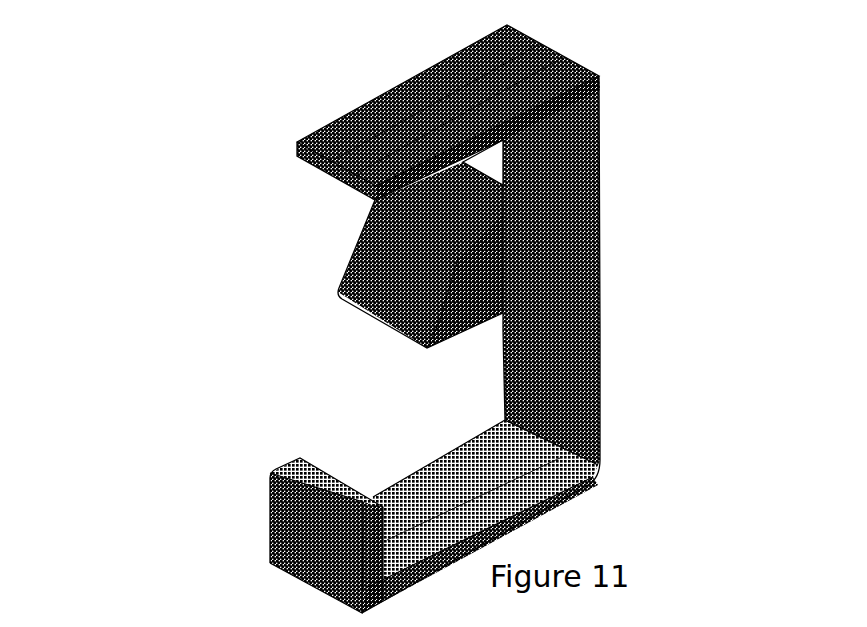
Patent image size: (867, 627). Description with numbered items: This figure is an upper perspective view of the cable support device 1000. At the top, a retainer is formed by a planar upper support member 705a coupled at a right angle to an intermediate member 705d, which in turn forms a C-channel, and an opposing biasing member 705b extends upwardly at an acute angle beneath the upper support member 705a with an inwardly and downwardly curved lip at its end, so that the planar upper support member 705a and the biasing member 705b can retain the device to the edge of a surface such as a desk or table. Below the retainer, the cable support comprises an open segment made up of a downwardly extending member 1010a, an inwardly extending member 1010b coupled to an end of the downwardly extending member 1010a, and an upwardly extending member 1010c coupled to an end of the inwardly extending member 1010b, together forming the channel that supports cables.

The cable support device 1000 is at (371, 309).
The planar upper support member 705a is at (376, 75).
The biasing member 705b is at (337, 266).
The intermediate member 705d is at (612, 152).
The downwardly extending member 1010a is at (614, 397).
The inwardly extending member 1010b is at (418, 463).
The upwardly extending member 1010c is at (257, 502).